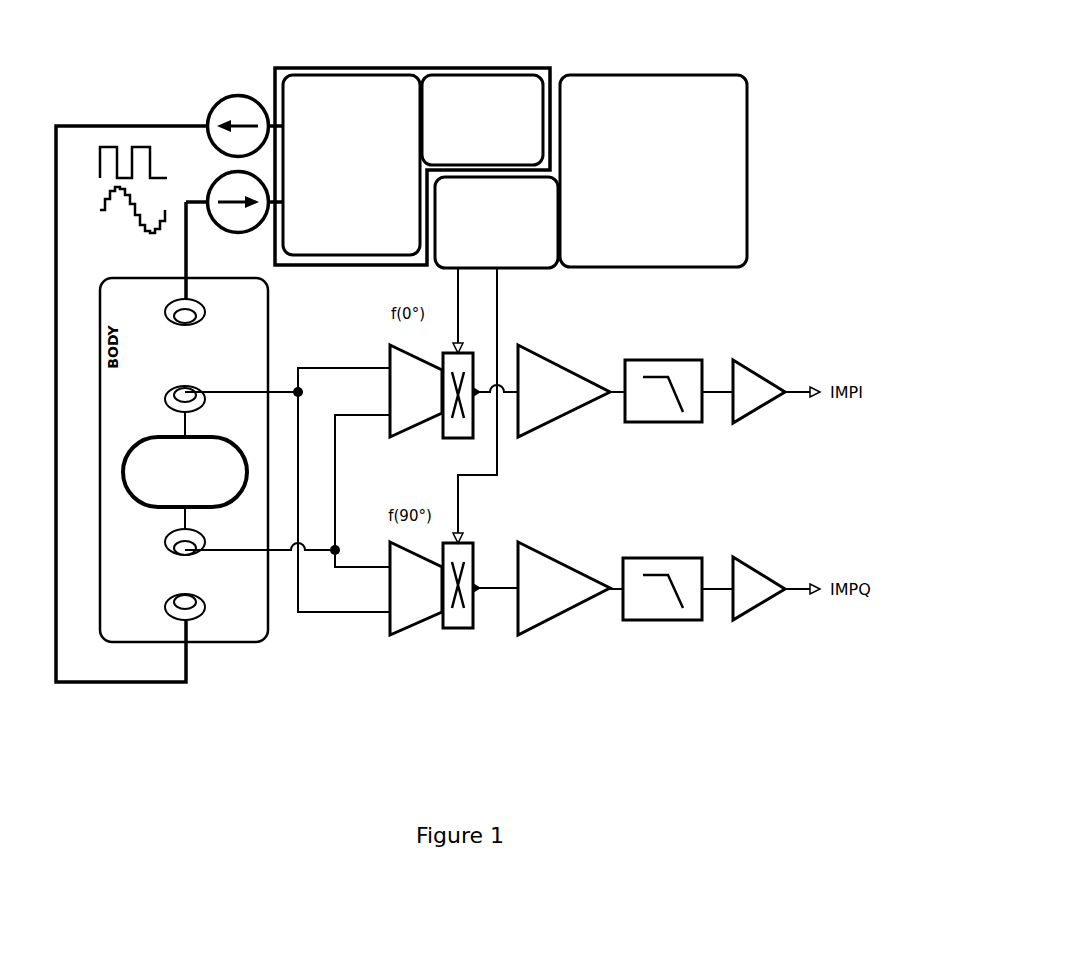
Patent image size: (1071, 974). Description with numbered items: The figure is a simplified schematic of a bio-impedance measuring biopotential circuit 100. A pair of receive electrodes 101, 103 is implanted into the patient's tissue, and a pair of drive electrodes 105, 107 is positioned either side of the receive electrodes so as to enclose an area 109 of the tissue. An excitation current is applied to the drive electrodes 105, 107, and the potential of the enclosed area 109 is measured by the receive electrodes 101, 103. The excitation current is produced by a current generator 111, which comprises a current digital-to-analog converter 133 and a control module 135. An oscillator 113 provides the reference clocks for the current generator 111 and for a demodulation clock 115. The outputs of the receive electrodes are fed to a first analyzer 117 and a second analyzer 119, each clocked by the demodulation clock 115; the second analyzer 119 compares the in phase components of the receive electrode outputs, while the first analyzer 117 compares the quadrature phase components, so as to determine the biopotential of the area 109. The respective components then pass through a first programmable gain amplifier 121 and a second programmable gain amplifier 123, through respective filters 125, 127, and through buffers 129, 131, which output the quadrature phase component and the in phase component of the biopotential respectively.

The biopotential circuit 100 is at (106, 702).
The receive electrode 101 is at (200, 532).
The receive electrode 103 is at (187, 391).
The drive electrode 105 is at (205, 606).
The drive electrode 107 is at (205, 311).
The enclosed area of tissue 109 is at (156, 435).
The current generator 111 is at (432, 66).
The oscillator 113 is at (716, 73).
The demodulation clock 115 is at (521, 240).
The first analyzer 117 is at (397, 634).
The second analyzer 119 is at (400, 434).
The first programmable gain amplifier 121 is at (567, 617).
The second programmable gain amplifier 123 is at (555, 418).
The filter 125 is at (667, 620).
The filter 127 is at (663, 422).
The buffer 129 is at (765, 607).
The buffer 131 is at (762, 413).
The current digital-to-analog converter 133 is at (317, 90).
The control module 135 is at (530, 95).